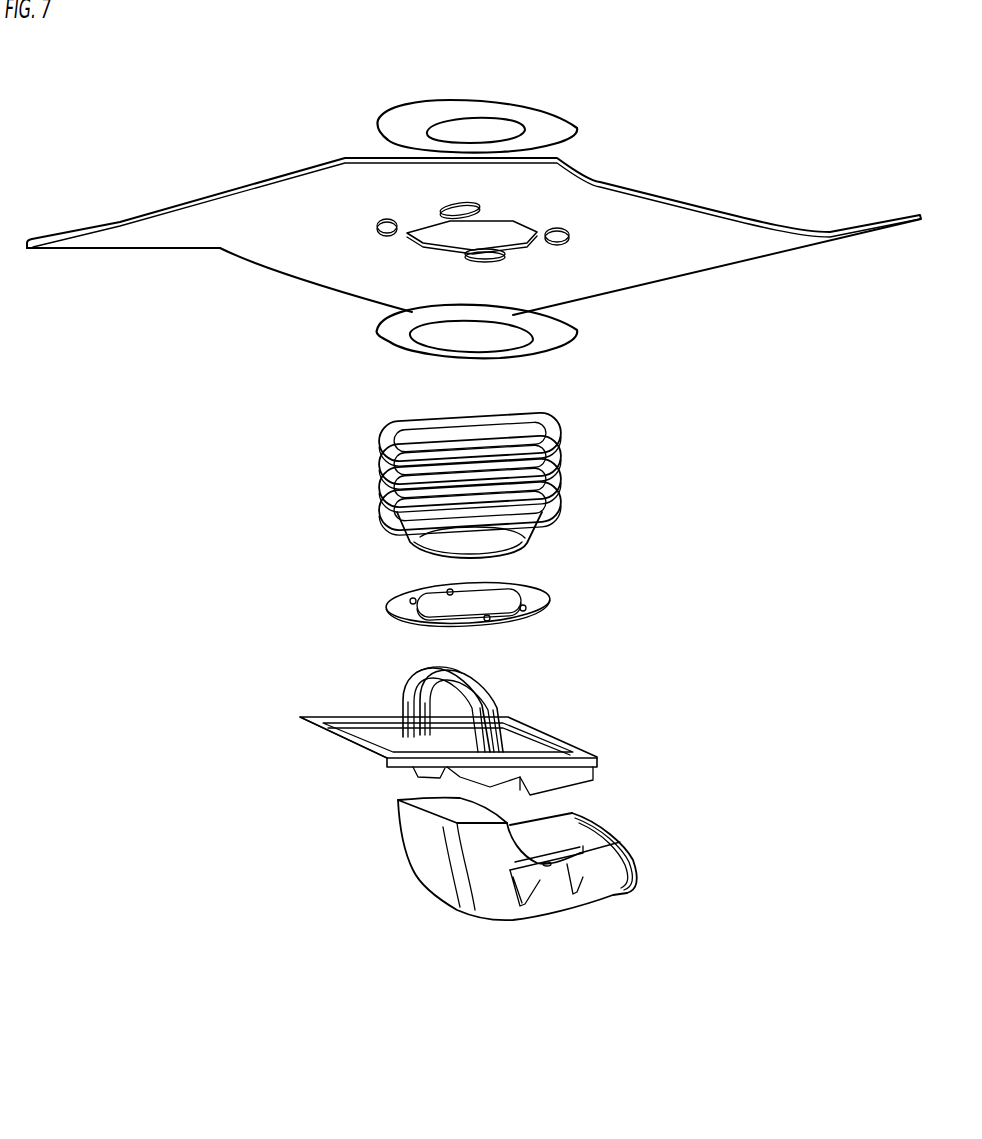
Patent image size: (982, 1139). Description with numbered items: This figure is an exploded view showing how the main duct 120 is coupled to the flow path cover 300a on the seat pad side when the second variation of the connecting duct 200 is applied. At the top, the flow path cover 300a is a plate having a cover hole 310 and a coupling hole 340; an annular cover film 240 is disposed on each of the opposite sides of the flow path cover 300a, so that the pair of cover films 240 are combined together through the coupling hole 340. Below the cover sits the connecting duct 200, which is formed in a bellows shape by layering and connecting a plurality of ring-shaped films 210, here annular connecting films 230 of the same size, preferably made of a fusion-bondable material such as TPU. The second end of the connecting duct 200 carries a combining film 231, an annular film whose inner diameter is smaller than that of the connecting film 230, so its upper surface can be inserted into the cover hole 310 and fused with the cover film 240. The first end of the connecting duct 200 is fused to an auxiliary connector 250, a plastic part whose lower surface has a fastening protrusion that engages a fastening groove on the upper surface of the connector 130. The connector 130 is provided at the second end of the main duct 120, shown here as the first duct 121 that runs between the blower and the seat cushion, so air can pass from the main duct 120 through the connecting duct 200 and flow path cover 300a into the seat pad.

The cover film 240 is at (543, 127).
The cover hole 310 is at (482, 242).
The coupling hole 340 is at (380, 233).
The flow path cover 300a is at (703, 257).
The combining film 231 is at (520, 420).
The connecting film 230 is at (449, 466).
The connecting duct 200 is at (556, 730).
The auxiliary connector 250 is at (540, 603).
The connector 130 is at (583, 752).
The first duct 121 is at (598, 885).
The main duct 120 is at (533, 894).
The film 210 is at (556, 730).